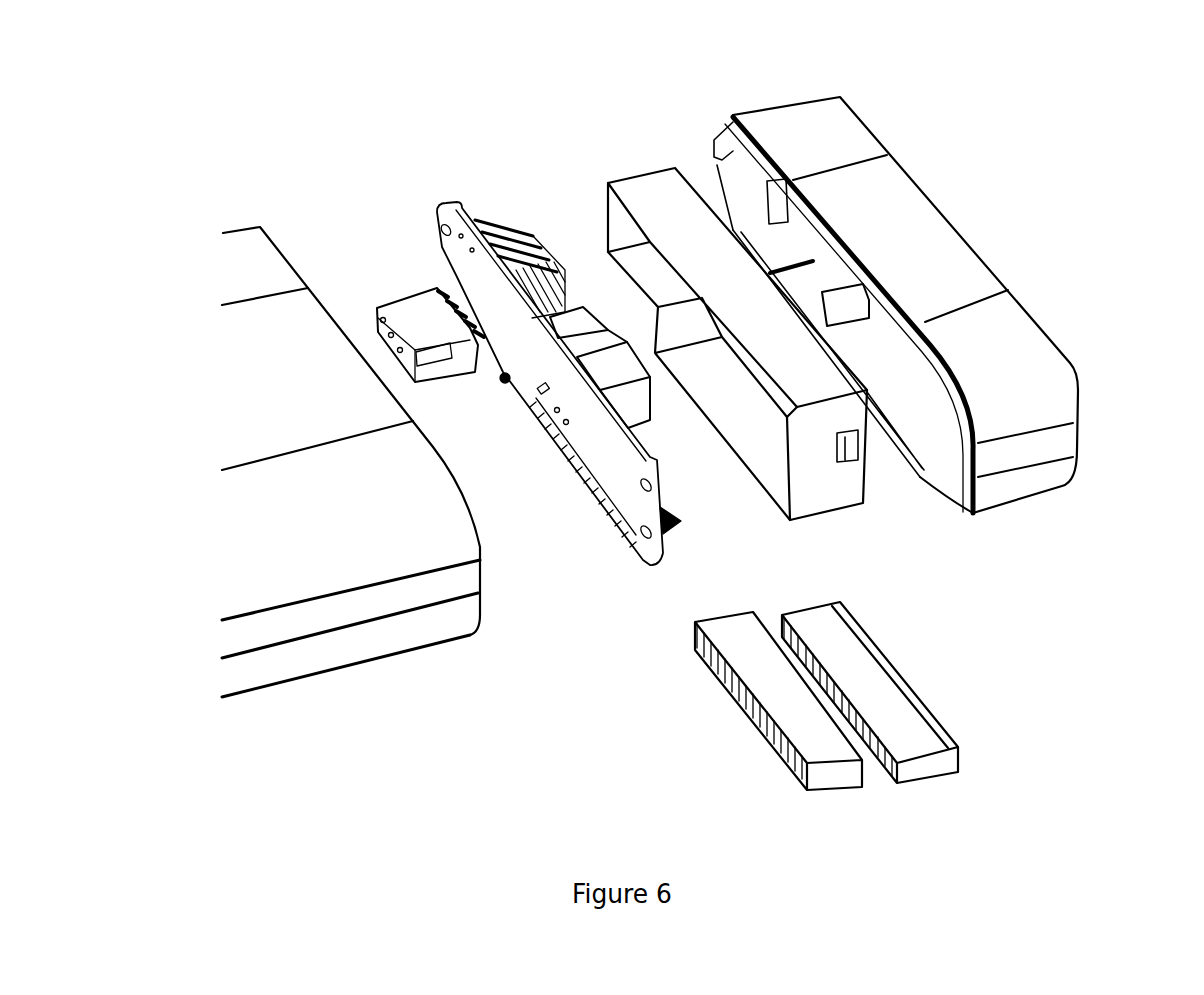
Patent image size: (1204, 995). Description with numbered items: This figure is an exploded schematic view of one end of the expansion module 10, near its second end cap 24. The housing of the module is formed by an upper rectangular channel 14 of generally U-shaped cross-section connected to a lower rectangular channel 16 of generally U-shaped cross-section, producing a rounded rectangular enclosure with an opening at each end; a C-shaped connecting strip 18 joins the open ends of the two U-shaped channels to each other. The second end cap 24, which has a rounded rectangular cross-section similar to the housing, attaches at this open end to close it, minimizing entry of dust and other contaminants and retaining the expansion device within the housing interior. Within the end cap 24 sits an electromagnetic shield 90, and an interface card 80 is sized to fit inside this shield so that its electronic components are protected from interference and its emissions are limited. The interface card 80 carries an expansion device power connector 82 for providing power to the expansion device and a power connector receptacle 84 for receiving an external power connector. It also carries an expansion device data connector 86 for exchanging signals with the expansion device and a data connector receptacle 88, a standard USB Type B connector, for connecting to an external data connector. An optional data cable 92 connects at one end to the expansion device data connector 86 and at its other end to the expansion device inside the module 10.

The expansion module 10 is at (1095, 102).
The upper rectangular channel 14 is at (397, 557).
The lower rectangular channel 16 is at (318, 651).
The C-shaped connecting strip 18 is at (260, 635).
The second end cap 24 is at (1040, 492).
The interface card 80 is at (453, 212).
The expansion device power connector 82 is at (393, 300).
The power connector receptacle 84 is at (583, 303).
The expansion device data connector 86 is at (590, 493).
The data connector receptacle 88 is at (655, 418).
The electromagnetic shield 90 is at (847, 507).
The data cable 92 is at (725, 693).